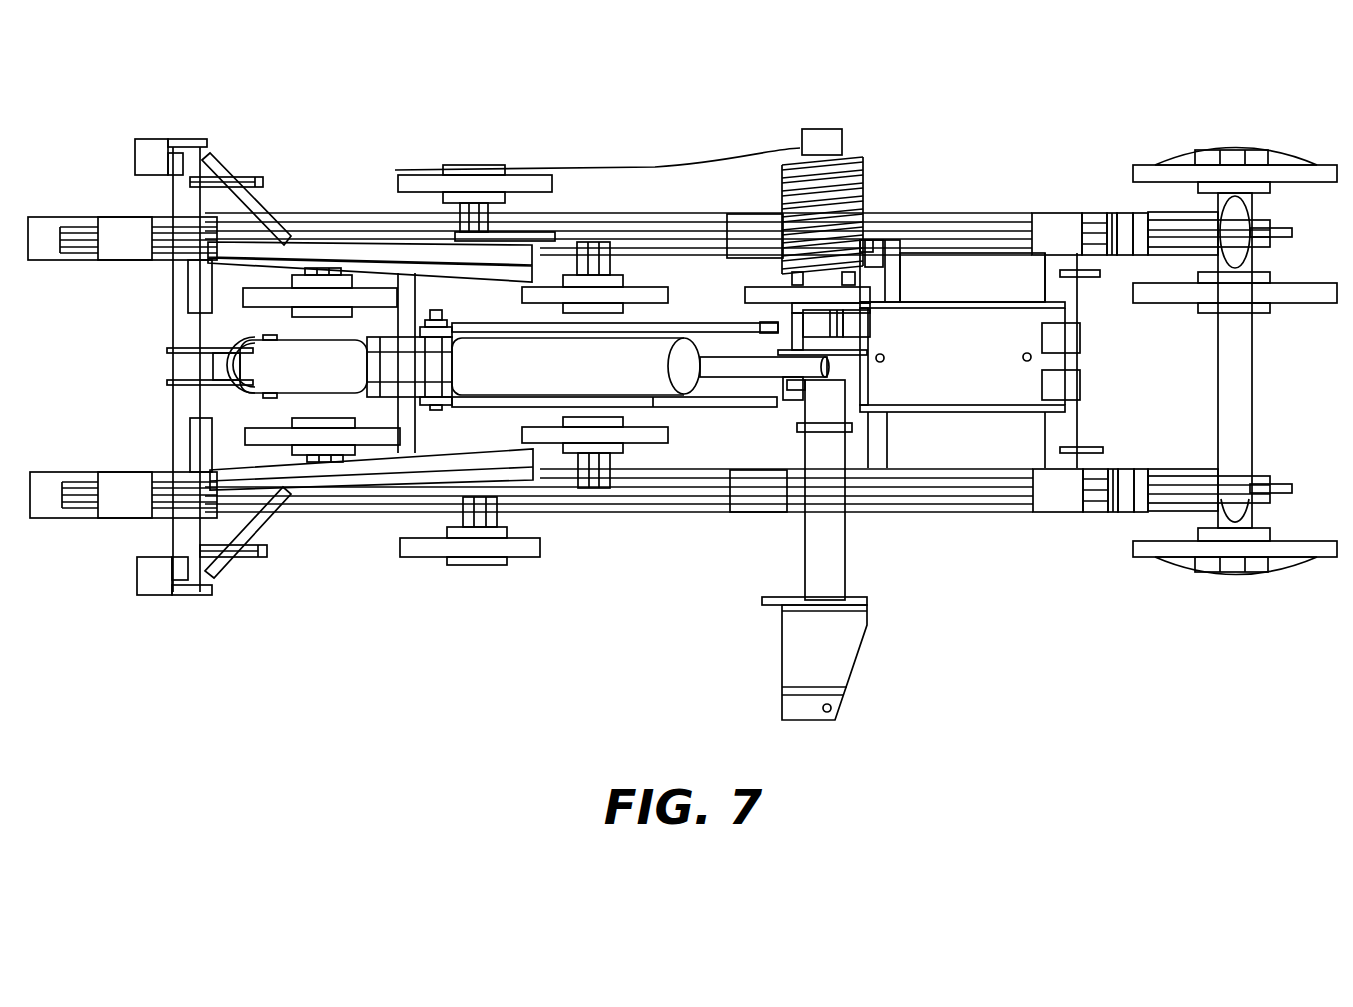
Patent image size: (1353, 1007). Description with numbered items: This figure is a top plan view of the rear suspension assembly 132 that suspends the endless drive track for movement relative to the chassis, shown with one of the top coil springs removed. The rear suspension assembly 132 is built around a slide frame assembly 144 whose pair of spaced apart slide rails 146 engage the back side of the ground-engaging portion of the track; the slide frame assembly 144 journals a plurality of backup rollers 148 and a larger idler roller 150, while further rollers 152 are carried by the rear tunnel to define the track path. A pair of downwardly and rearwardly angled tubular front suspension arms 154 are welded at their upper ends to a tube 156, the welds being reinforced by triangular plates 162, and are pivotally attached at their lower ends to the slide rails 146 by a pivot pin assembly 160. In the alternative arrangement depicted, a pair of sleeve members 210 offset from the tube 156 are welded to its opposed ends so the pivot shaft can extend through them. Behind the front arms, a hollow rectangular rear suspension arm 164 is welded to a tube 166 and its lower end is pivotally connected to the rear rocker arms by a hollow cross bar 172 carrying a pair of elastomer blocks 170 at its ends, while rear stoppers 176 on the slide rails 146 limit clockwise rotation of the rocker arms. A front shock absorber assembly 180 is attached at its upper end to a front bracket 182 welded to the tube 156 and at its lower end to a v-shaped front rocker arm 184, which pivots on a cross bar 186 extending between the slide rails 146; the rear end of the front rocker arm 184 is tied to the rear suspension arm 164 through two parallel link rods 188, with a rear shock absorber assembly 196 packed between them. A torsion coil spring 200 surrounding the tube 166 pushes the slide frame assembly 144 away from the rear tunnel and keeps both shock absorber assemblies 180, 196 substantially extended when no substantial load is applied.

The rear suspension assembly 132 is at (706, 112).
The slide frame assembly 144 is at (640, 490).
The slide rails 146 is at (663, 217).
The backup rollers 148 is at (527, 575).
The idler roller 150 is at (1272, 162).
The rollers 152 is at (892, 293).
The front suspension arms 154 is at (323, 240).
The tube 156 is at (183, 405).
The pivot pin assembly 160 is at (563, 238).
The triangular plates 162 is at (255, 210).
The rear suspension arm 164 is at (985, 303).
The tube 166 is at (840, 548).
The blocks 170 is at (1060, 228).
The hollow cross bar 172 is at (980, 470).
The rear stoppers 176 is at (1112, 225).
The front shock absorber assembly 180 is at (193, 323).
The front bracket 182 is at (172, 350).
The front rocker arm 184 is at (430, 340).
The cross bar 186 is at (403, 443).
The link rods 188 is at (743, 327).
The rear shock absorber assembly 196 is at (650, 375).
The torsion coil spring 200 is at (860, 163).
The sleeve members 210 is at (152, 152).